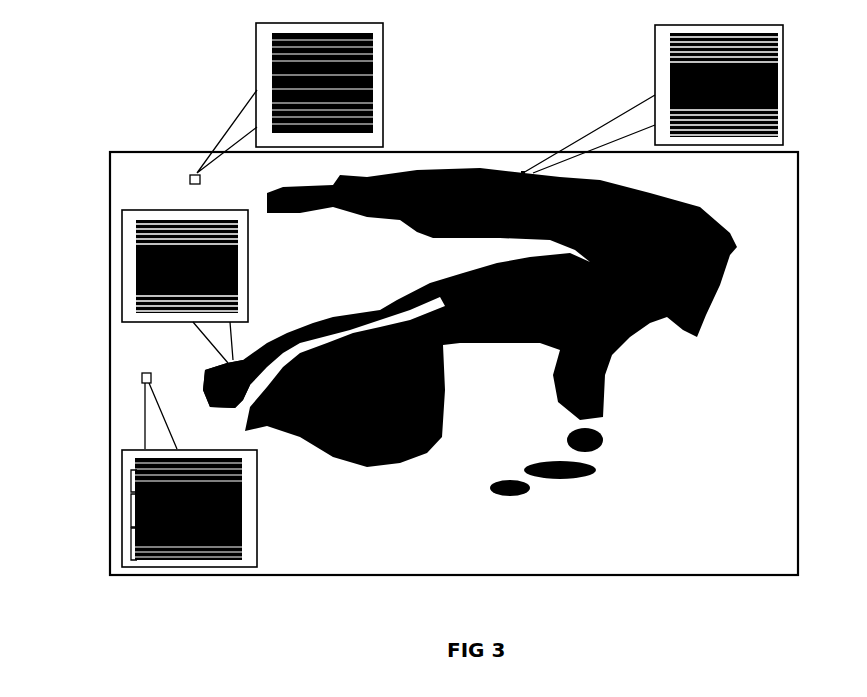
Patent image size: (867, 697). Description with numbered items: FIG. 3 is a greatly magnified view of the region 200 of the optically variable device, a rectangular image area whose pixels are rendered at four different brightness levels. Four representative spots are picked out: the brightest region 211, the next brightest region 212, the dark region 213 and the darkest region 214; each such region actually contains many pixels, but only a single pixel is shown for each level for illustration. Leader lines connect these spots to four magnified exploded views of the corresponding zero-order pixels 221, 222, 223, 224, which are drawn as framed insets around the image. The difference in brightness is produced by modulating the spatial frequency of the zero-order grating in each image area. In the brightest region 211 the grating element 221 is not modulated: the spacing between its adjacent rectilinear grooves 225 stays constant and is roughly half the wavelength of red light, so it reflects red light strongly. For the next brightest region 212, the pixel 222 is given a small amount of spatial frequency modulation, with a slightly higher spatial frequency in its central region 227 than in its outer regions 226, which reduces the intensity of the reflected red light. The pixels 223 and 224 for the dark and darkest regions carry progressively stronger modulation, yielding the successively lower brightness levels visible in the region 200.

The region 200 is at (647, 574).
The brightest region 211 is at (195, 175).
The next brightest region 212 is at (140, 378).
The dark region 213 is at (523, 173).
The darkest region 214 is at (212, 366).
The zero-order grating element 221 is at (293, 98).
The zero-order pixel 222 is at (152, 515).
The zero-order pixel 223 is at (670, 78).
The zero-order pixel 224 is at (137, 262).
The rectilinear grooves 225 is at (273, 36).
The outer pixel rows 226 is at (131, 476).
The central region 227 is at (131, 508).